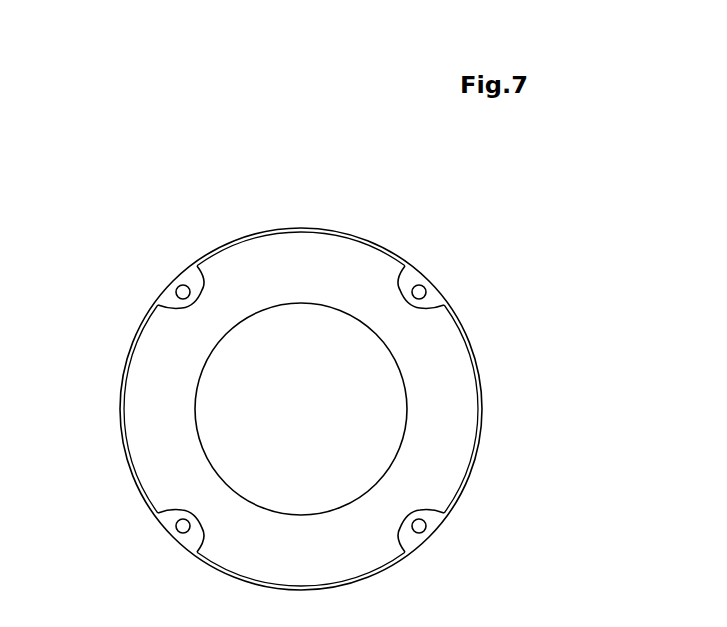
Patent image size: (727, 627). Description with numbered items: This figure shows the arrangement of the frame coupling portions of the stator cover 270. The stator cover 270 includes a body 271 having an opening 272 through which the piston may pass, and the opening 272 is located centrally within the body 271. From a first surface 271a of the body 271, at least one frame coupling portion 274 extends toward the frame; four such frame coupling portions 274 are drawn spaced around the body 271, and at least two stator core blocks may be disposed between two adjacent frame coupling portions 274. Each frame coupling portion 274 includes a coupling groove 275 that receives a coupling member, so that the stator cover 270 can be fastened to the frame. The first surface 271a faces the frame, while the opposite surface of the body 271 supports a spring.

The stator cover 270 is at (136, 220).
The body 271 is at (243, 239).
The first surface 271a is at (305, 247).
The opening 272 is at (407, 409).
The frame coupling portion 274 is at (413, 272).
The coupling groove 275 is at (422, 292).